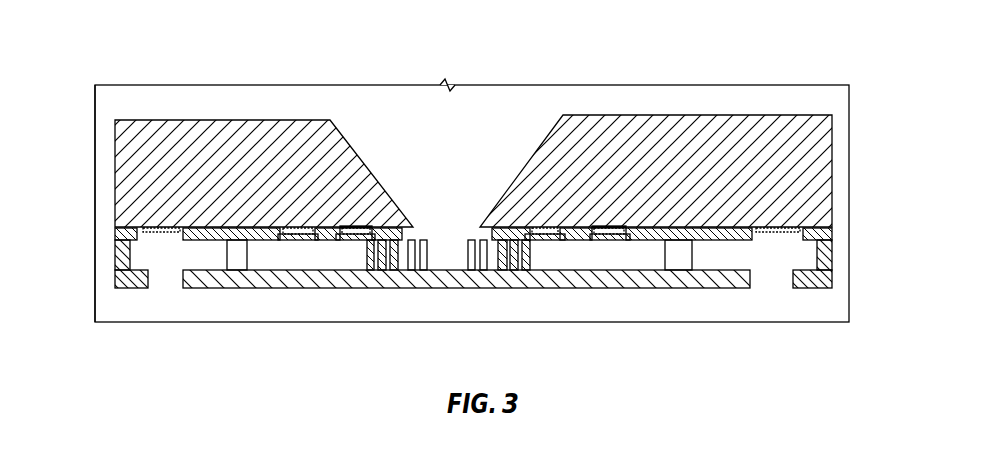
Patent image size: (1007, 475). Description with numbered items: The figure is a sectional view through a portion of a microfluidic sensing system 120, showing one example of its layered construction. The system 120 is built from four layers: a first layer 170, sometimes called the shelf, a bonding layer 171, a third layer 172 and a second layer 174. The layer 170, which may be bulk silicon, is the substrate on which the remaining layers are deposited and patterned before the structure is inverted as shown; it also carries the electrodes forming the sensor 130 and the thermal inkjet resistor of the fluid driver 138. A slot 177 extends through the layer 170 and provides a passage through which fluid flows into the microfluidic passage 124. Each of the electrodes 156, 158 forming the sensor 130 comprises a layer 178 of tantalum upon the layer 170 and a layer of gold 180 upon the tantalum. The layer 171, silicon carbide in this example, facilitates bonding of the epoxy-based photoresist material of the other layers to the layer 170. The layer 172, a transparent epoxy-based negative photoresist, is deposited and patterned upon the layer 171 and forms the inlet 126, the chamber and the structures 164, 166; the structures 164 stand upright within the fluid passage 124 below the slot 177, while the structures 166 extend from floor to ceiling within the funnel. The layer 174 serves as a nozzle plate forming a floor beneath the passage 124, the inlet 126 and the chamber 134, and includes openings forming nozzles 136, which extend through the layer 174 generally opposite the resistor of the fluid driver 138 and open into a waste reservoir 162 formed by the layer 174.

The microfluidic sensing system 120 is at (780, 64).
The microfluidic passage 124 is at (445, 239).
The inlet 126 is at (332, 260).
The sensor 130 is at (352, 211).
The chamber 134 is at (242, 283).
The nozzles 136 is at (147, 286).
The fluid driver 138 is at (170, 216).
The electrode 156 is at (287, 228).
The electrode 158 is at (544, 227).
The waste reservoir 162 is at (162, 315).
The structures 164 is at (424, 268).
The structures 166 is at (394, 268).
The layer 170 is at (116, 138).
The layer 171 is at (120, 238).
The layer 172 is at (115, 254).
The layer 174 is at (115, 280).
The slot 177 is at (507, 192).
The layer of tantalum 178 is at (285, 228).
The layer of gold 180 is at (297, 240).